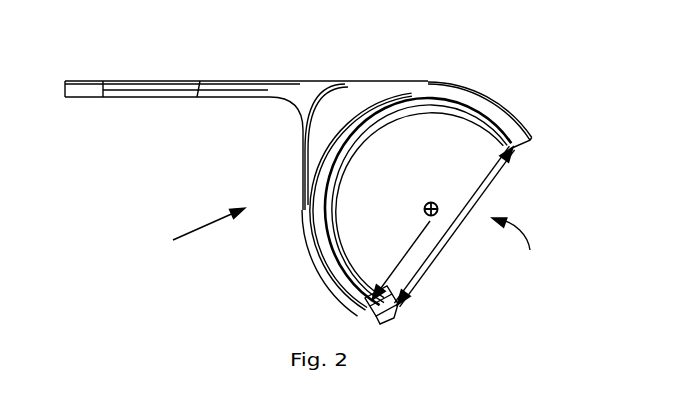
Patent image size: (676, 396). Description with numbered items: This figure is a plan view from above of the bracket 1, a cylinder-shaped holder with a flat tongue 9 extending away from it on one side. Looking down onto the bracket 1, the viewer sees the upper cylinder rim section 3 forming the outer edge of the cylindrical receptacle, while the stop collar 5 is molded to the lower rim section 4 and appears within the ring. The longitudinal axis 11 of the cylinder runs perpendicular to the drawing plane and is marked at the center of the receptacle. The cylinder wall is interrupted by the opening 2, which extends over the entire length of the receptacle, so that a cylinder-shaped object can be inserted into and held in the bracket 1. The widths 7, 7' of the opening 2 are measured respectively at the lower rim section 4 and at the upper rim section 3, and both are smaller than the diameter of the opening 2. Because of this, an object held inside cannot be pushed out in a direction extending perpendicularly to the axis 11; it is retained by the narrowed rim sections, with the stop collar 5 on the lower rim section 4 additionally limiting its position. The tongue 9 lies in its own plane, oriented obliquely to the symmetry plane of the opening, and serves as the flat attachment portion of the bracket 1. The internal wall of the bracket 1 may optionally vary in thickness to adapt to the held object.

The bracket 1 is at (203, 229).
The opening 2 is at (512, 246).
The upper cylinder rim section 3 is at (503, 119).
The lower rim section 4 is at (372, 326).
The stop collar 5 is at (348, 139).
The width of the opening at the lower rim section 7 is at (454, 230).
The width of the opening at the upper rim section 7' is at (398, 260).
The tongue 9 is at (88, 97).
The longitudinal axis 11 is at (428, 204).